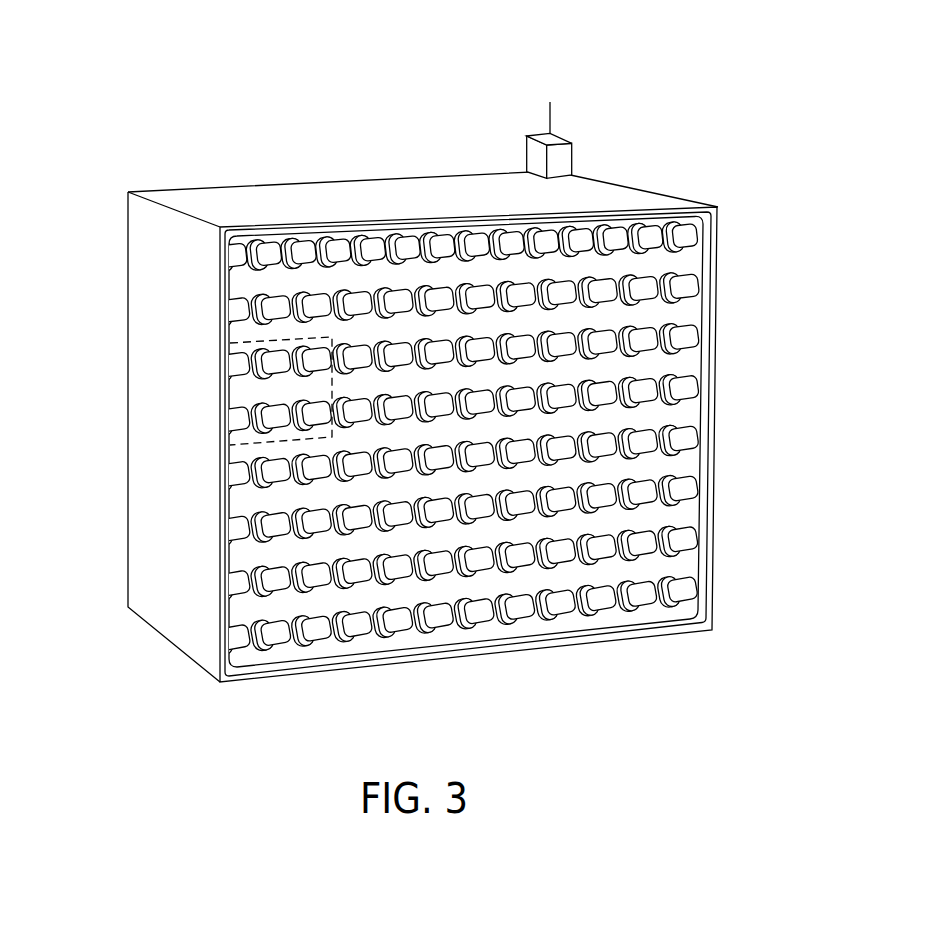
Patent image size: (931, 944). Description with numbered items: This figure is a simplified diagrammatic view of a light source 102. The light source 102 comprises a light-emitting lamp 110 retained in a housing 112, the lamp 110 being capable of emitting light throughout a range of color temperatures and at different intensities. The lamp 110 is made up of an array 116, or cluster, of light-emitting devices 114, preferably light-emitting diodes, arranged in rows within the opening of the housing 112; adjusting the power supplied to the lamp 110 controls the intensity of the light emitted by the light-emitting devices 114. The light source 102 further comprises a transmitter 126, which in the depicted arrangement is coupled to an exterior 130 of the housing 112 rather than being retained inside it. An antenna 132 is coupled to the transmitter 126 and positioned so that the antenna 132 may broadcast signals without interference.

The light source 102 is at (360, 48).
The light-emitting lamp 110 is at (330, 682).
The housing 112 is at (157, 505).
The light-emitting device 114 is at (402, 247).
The array 116 is at (730, 400).
The transmitter 126 is at (562, 160).
The exterior of the housing 130 is at (235, 205).
The antenna 132 is at (552, 107).